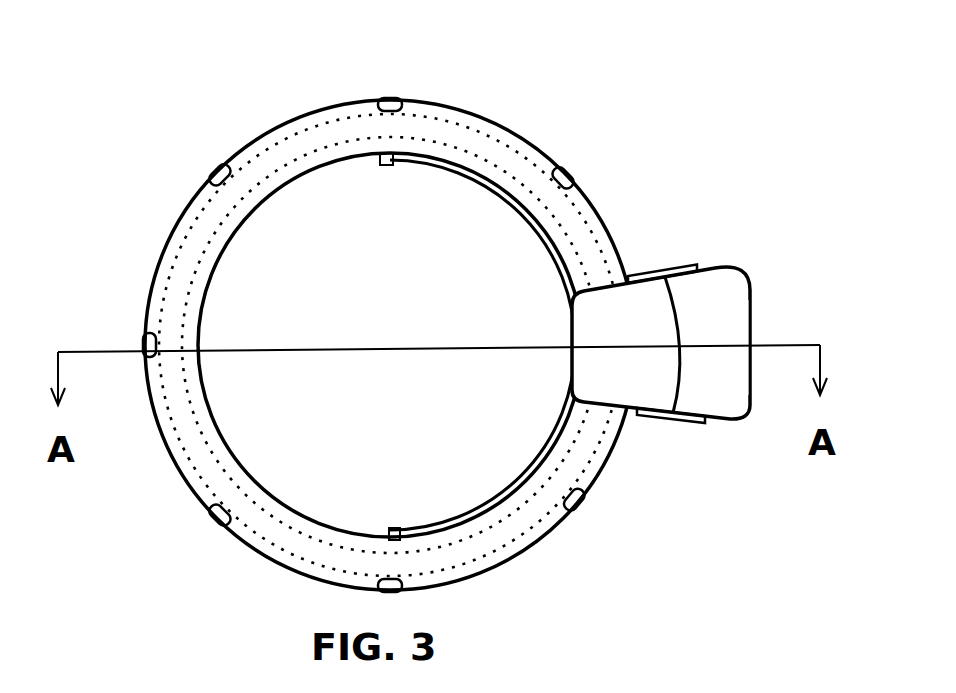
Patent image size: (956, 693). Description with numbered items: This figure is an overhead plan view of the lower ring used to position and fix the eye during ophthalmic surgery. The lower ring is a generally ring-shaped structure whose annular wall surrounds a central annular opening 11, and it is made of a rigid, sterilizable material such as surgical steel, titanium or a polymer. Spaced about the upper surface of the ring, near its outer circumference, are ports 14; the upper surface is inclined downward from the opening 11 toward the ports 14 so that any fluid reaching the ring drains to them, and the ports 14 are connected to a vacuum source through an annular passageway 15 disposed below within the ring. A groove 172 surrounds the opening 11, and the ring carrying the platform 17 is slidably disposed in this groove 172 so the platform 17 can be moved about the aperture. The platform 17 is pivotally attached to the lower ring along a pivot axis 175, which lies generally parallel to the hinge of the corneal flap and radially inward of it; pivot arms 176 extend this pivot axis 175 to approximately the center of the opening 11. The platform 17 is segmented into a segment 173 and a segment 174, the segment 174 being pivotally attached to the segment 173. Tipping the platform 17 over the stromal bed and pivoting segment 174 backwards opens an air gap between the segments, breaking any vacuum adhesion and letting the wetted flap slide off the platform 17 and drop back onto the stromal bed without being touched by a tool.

The annular opening 11 is at (377, 270).
The ports 14 is at (570, 172).
The annular passageway 15 is at (265, 145).
The platform 17 is at (825, 195).
The groove 172 is at (217, 245).
The segment 173 is at (622, 322).
The segment 174 is at (718, 312).
The pivot axis 175 is at (393, 153).
The pivot arms 176 is at (560, 242).